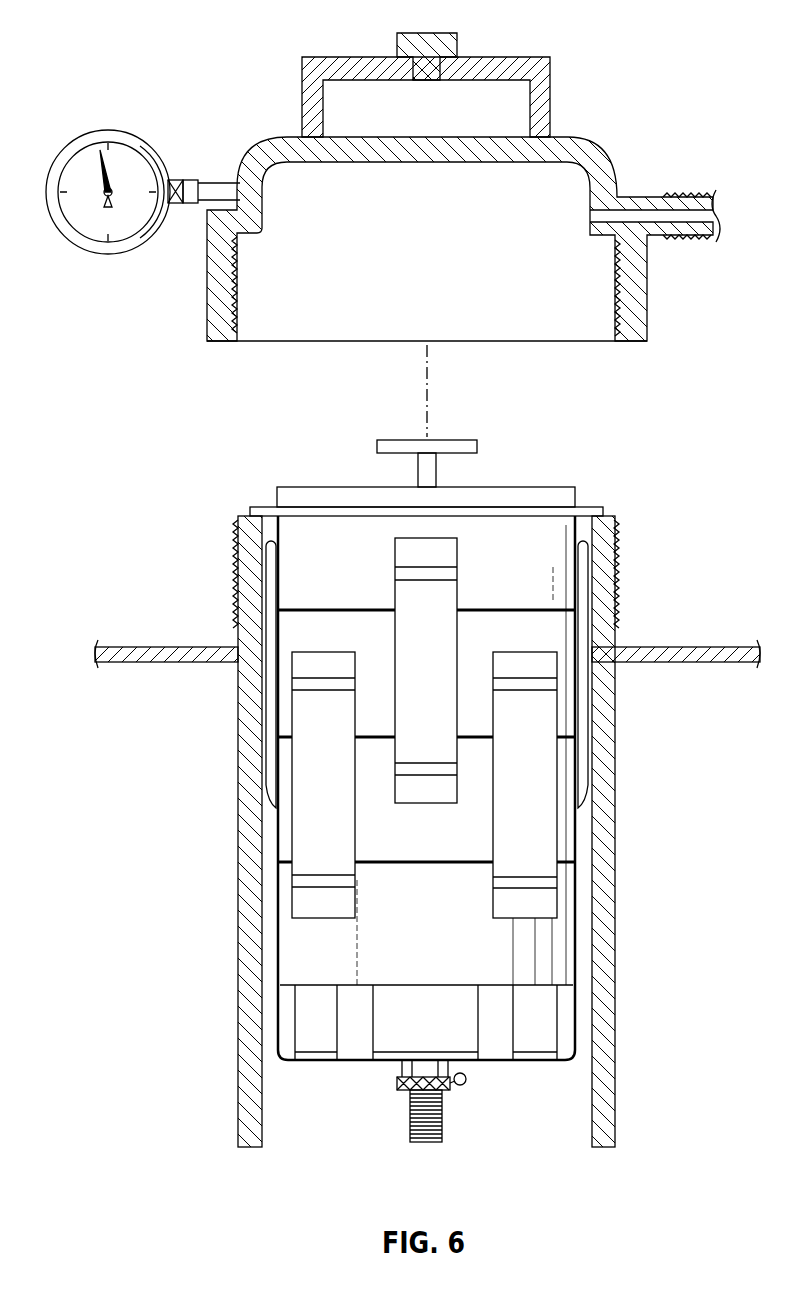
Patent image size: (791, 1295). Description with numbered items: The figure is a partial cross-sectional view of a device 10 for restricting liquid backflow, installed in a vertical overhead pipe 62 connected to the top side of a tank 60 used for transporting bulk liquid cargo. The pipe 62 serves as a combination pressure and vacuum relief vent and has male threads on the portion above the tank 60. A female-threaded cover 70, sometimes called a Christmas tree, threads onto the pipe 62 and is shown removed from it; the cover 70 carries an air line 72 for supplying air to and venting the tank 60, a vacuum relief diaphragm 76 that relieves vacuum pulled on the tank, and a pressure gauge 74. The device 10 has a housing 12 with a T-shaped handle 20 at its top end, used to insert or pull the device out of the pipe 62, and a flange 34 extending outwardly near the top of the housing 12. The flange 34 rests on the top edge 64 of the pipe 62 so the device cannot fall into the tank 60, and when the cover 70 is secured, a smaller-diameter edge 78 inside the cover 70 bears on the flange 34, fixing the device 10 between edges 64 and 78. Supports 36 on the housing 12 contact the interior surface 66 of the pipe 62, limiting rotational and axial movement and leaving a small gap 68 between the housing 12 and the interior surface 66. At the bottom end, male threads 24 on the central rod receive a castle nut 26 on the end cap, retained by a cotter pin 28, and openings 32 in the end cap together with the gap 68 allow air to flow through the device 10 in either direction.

The device 10 is at (345, 473).
The housing 12 is at (356, 579).
The handle 20 is at (405, 440).
The male threads 24 is at (445, 1120).
The castle nut 26 is at (405, 1065).
The cotter pin 28 is at (462, 1088).
The openings 32 is at (357, 1040).
The flange 34 is at (592, 508).
The supports 36 is at (420, 658).
The tank 60 is at (178, 645).
The overhead pipe 62 is at (240, 846).
The top edge 64 is at (243, 509).
The interior surface 66 is at (266, 1120).
The gap 68 is at (268, 1044).
The cover 70 is at (568, 136).
The air line 72 is at (633, 197).
The pressure gauge 74 is at (120, 152).
The vacuum relief diaphragm 76 is at (487, 98).
The edge 78 is at (253, 239).